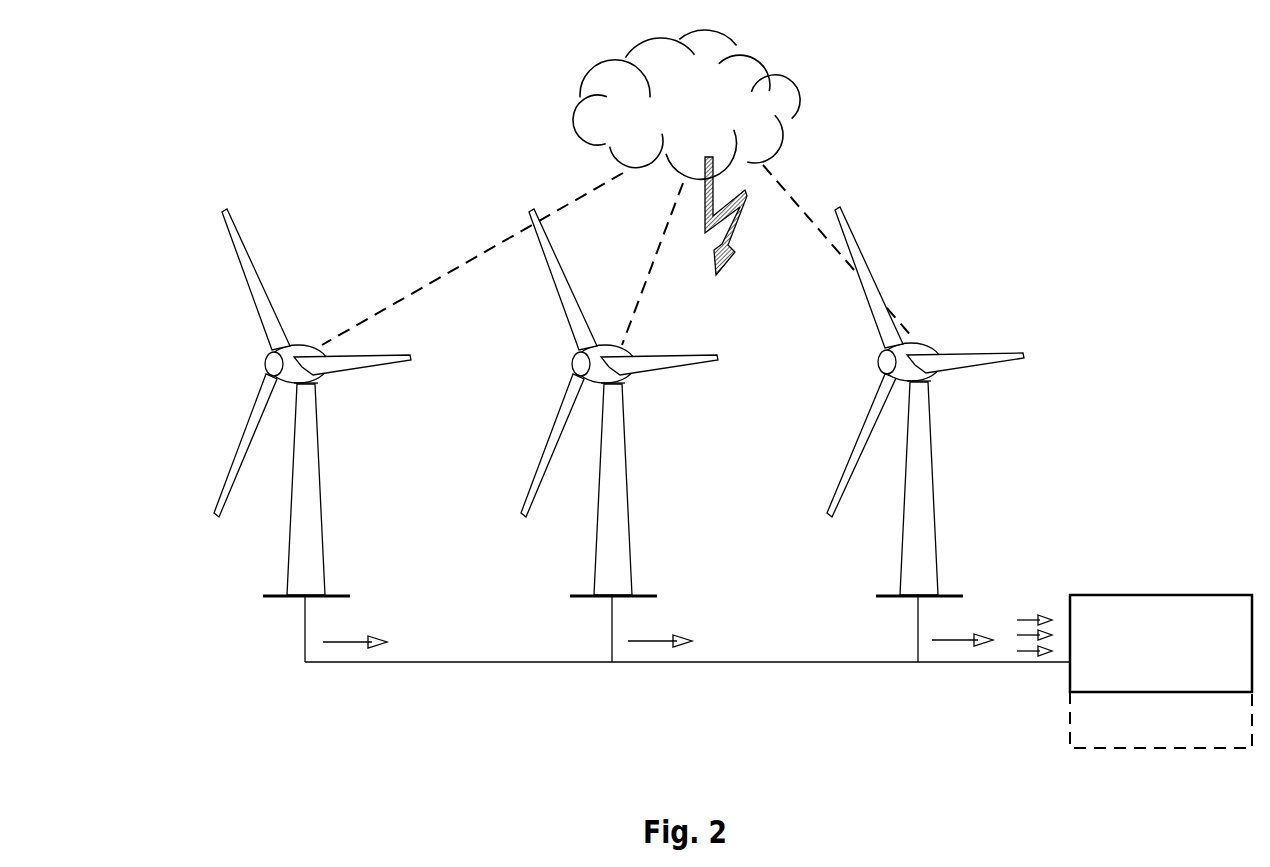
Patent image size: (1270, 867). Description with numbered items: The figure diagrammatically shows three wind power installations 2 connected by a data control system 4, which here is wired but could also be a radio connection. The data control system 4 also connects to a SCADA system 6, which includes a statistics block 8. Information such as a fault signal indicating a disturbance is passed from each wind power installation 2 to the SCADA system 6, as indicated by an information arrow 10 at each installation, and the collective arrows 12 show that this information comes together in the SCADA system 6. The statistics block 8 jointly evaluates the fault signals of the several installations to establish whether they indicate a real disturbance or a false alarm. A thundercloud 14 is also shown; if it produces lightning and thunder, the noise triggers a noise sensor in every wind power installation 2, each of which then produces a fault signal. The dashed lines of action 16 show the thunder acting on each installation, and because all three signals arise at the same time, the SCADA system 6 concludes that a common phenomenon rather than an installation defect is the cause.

The wind power installation 2 is at (308, 472).
The data control system 4 is at (543, 662).
The SCADA system 6 is at (1175, 605).
The statistics block 8 is at (1215, 740).
The information arrow 10 is at (350, 643).
The collective arrows 12 is at (1023, 618).
The thundercloud 14 is at (797, 100).
The dashed lines of action 16 is at (467, 260).